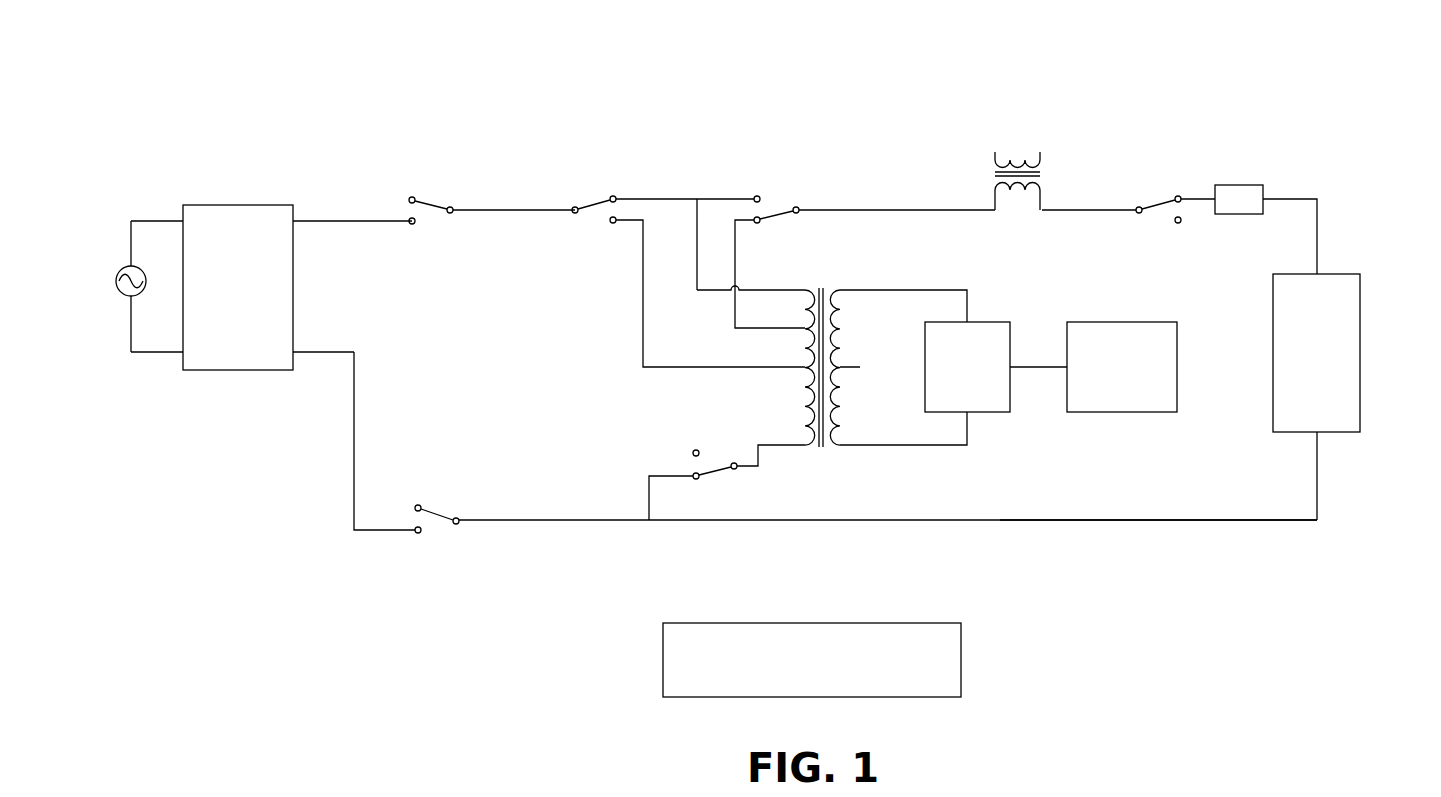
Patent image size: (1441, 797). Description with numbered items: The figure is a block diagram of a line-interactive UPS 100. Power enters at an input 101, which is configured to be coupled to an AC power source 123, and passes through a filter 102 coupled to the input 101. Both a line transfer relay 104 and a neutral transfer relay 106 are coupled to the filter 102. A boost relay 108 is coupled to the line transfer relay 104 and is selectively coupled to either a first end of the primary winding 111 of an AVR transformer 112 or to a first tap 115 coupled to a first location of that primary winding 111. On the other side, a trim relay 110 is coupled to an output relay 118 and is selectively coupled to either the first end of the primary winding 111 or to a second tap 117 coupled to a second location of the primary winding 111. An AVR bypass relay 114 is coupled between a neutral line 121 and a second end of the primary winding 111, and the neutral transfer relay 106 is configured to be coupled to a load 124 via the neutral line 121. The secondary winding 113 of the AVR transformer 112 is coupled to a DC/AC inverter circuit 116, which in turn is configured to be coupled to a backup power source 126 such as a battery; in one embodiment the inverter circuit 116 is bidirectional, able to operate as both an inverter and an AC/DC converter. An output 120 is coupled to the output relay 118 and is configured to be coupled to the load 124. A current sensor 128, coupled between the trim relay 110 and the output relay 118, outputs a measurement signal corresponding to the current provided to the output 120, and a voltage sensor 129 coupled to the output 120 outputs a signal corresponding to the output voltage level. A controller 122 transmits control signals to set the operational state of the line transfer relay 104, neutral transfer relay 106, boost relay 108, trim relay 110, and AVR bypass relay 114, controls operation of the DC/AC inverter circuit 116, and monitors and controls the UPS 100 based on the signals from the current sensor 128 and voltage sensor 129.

The line-interactive UPS 100 is at (422, 92).
The input 101 is at (161, 221).
The filter 102 is at (231, 205).
The line transfer relay 104 is at (405, 266).
The neutral transfer relay 106 is at (448, 495).
The boost relay 108 is at (575, 266).
The trim relay 110 is at (785, 182).
The primary winding 111 is at (802, 410).
The AVR transformer 112 is at (852, 347).
The secondary winding 113 is at (843, 347).
The AVR bypass relay 114 is at (676, 433).
The first tap 115 is at (802, 366).
The DC/AC inverter circuit 116 is at (980, 322).
The second tap 117 is at (802, 326).
The output relay 118 is at (1212, 258).
The output 120 is at (1294, 198).
The neutral line 121 is at (1017, 521).
The controller 122 is at (883, 623).
The AC power source 123 is at (120, 269).
The load 124 is at (1331, 274).
The backup power source 126 is at (1120, 322).
The current sensor 128 is at (993, 186).
The voltage sensor 129 is at (1240, 185).